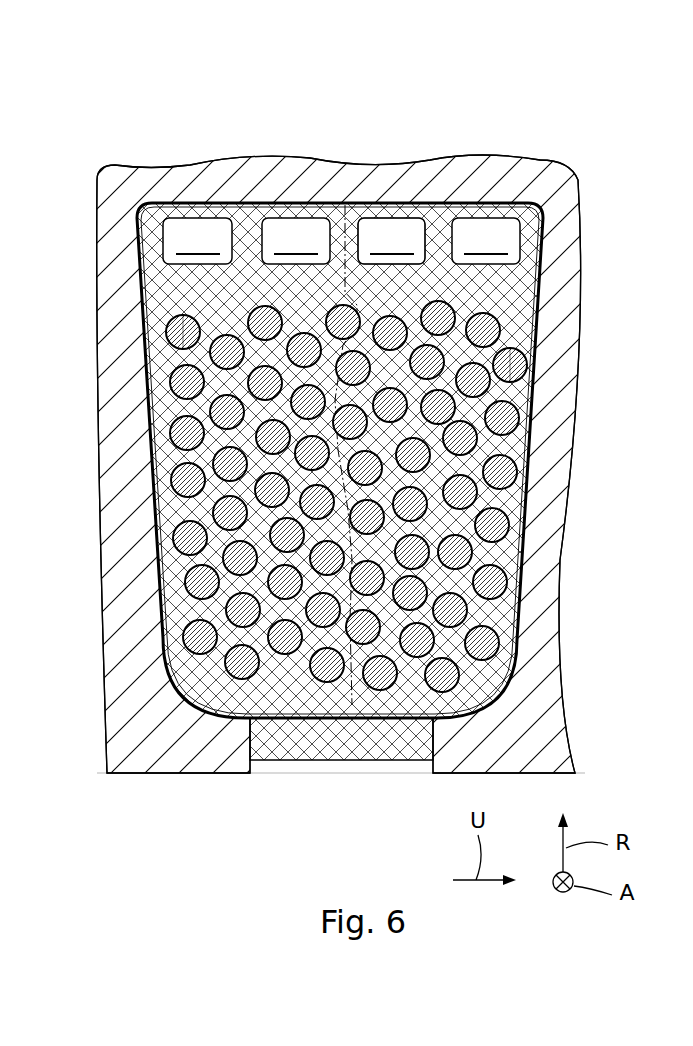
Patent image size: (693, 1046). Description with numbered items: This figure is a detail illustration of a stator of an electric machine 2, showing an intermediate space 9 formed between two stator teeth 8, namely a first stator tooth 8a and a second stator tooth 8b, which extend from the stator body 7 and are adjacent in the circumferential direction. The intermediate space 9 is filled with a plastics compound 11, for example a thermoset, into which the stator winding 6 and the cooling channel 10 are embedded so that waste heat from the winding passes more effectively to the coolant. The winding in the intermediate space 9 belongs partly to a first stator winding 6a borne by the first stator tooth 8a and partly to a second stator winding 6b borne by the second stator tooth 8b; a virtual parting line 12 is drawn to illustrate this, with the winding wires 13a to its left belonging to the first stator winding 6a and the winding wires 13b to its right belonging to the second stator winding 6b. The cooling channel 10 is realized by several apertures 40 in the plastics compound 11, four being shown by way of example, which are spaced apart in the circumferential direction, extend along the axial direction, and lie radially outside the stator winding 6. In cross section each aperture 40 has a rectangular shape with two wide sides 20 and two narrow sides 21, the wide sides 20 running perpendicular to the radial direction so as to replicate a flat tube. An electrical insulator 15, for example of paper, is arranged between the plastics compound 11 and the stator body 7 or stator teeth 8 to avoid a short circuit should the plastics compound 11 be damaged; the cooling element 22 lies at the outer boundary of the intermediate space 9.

The battery module 2 is at (628, 166).
The stator winding 6 is at (342, 496).
The first stator winding 6a is at (172, 582).
The second stator winding 6b is at (531, 418).
The stator body 7 is at (140, 176).
The stator tooth 8 is at (338, 430).
The first stator tooth 8a is at (127, 487).
The second stator tooth 8b is at (545, 548).
The intermediate space 9 is at (500, 500).
The cooling channel 10 is at (534, 240).
The plastics compound 11 is at (507, 298).
The virtual parting line 12 is at (372, 733).
The winding wires 13a is at (178, 395).
The winding wires 13b is at (522, 395).
The electrical insulator 15 is at (285, 725).
The wide sides 20 is at (191, 207).
The narrow sides 21 is at (231, 207).
The cooling element 22 is at (391, 241).
The apertures 40 is at (388, 210).